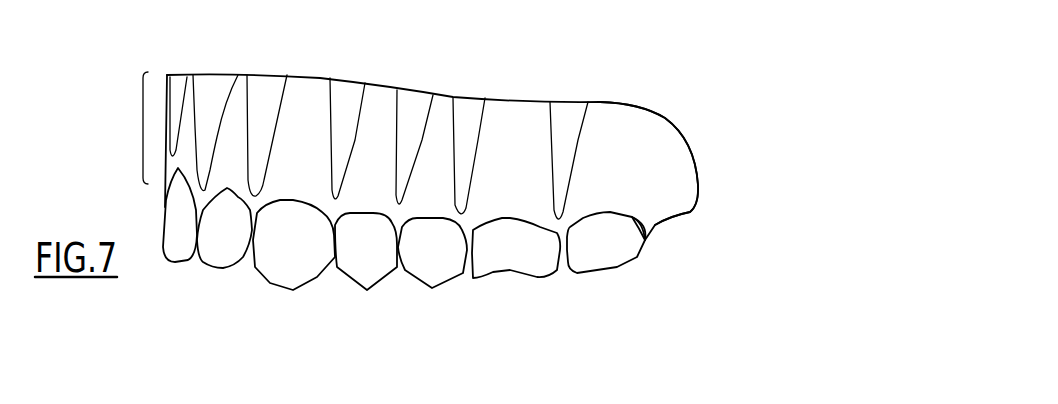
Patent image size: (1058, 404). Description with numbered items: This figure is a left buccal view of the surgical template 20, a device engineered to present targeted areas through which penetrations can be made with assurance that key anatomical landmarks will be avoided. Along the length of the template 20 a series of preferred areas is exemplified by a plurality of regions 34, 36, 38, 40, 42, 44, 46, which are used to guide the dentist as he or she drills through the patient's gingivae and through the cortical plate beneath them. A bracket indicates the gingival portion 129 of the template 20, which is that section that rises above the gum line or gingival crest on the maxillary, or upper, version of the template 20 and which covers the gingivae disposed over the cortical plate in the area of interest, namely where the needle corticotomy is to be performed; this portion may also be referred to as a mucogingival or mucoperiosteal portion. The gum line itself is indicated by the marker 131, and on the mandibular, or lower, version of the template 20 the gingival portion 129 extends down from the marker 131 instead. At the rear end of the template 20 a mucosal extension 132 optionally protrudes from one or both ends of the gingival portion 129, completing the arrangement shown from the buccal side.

The surgical template 20 is at (103, 174).
The region 34 is at (180, 85).
The region 36 is at (223, 83).
The region 38 is at (270, 88).
The region 40 is at (350, 92).
The region 42 is at (415, 102).
The region 44 is at (465, 112).
The region 46 is at (567, 113).
The gingival portion 129 is at (140, 130).
The marker 131 is at (645, 240).
The mucosal extension 132 is at (662, 157).